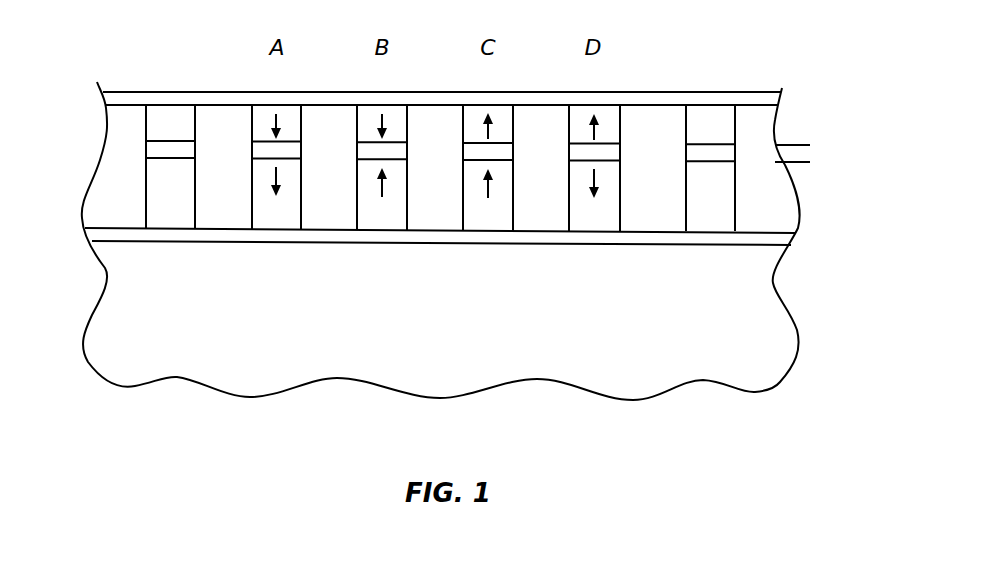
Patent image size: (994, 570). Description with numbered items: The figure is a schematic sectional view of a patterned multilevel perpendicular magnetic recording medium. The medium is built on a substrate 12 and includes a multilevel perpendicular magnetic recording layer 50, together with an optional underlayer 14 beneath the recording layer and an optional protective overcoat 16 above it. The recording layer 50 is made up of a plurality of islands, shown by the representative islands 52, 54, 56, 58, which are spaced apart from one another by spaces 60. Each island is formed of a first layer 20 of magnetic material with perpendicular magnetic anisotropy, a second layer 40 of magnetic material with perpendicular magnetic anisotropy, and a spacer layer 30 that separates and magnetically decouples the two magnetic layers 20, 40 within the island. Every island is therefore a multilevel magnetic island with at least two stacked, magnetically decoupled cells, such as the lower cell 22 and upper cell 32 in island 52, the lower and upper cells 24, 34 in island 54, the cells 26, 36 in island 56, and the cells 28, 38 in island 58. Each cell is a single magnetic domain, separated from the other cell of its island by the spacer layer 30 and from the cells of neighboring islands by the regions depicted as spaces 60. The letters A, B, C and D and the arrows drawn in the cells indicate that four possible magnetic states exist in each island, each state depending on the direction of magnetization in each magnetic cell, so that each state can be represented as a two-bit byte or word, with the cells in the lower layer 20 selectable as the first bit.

The substrate 12 is at (783, 357).
The underlayer 14 is at (790, 240).
The protective overcoat 16 is at (778, 106).
The first layer 20 is at (808, 165).
The spacer layer 30 is at (808, 148).
The second layer 40 is at (808, 110).
The multilevel perpendicular magnetic recording layer 50 is at (76, 105).
The cell 22 is at (277, 220).
The cell 24 is at (382, 220).
The cell 26 is at (488, 222).
The cell 28 is at (594, 222).
The cell 32 is at (276, 112).
The cell 34 is at (382, 112).
The cell 36 is at (488, 112).
The cell 38 is at (594, 112).
The island 52 is at (250, 122).
The island 54 is at (355, 122).
The island 56 is at (461, 122).
The island 58 is at (567, 122).
The spaces 60 is at (330, 220).